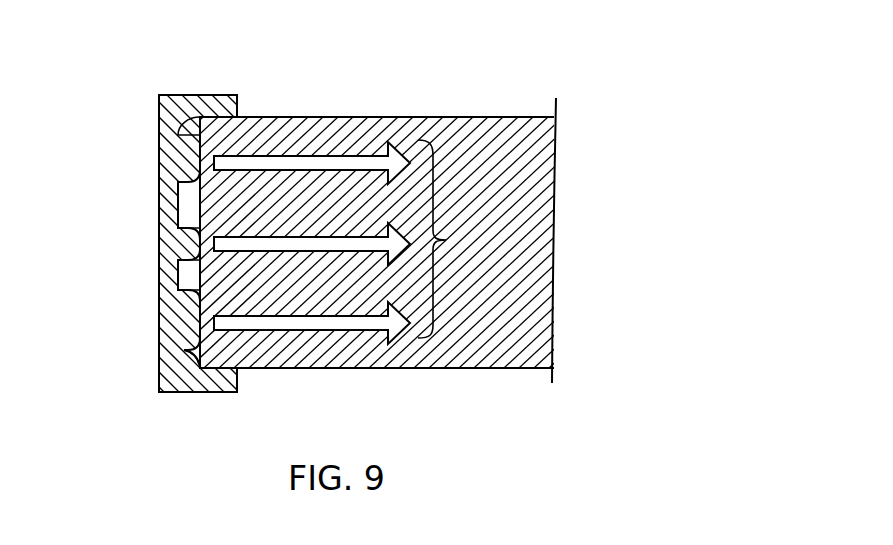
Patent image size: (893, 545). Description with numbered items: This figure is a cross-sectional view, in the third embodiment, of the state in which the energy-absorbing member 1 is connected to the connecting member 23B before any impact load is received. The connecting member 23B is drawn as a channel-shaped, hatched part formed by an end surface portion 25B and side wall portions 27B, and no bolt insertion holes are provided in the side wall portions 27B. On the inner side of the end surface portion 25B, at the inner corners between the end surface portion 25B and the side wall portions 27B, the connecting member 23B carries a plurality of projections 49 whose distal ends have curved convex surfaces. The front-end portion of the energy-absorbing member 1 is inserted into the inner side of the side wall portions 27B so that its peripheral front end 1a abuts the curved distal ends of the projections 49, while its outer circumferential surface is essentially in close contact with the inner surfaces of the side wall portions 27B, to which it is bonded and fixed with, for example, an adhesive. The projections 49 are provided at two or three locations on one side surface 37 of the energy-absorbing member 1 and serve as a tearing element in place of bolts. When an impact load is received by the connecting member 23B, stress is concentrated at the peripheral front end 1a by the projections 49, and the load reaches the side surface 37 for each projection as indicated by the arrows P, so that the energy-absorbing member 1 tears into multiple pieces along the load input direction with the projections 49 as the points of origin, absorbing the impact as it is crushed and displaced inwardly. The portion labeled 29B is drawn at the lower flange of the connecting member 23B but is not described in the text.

The energy-absorbing member 1 is at (409, 204).
The peripheral front end 1a is at (158, 298).
The connecting member 23B is at (158, 259).
The end surface portion 25B is at (163, 210).
The side wall portions 27B is at (197, 93).
The corner portion 29B is at (238, 388).
The side surface 37 is at (485, 115).
The projections 49 is at (182, 165).
The arrows P is at (444, 239).